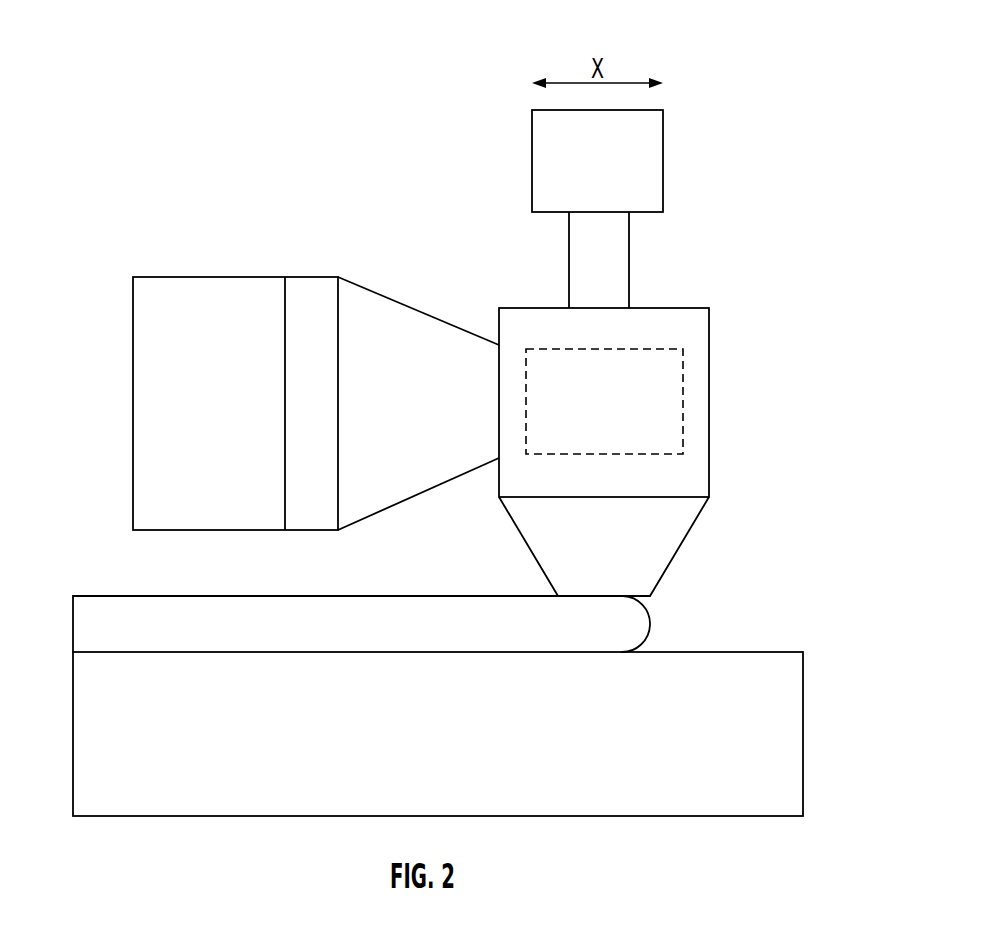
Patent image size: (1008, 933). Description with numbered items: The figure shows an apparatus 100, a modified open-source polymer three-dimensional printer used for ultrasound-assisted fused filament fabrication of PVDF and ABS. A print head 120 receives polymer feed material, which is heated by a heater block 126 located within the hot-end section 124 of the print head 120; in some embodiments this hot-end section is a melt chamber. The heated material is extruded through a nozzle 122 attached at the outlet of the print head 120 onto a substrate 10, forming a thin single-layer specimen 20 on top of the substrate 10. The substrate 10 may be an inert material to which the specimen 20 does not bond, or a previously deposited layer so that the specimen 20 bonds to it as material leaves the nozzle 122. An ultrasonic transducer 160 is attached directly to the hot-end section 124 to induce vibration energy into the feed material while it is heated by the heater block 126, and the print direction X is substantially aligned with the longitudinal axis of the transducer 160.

The apparatus 100 is at (779, 114).
The print head 120 is at (682, 358).
The hot-end section 124 is at (709, 423).
The heater block 126 is at (683, 362).
The nozzle 122 is at (683, 541).
The ultrasonic transducer 160 is at (133, 448).
The specimen 20 is at (95, 596).
The substrate 10 is at (803, 740).